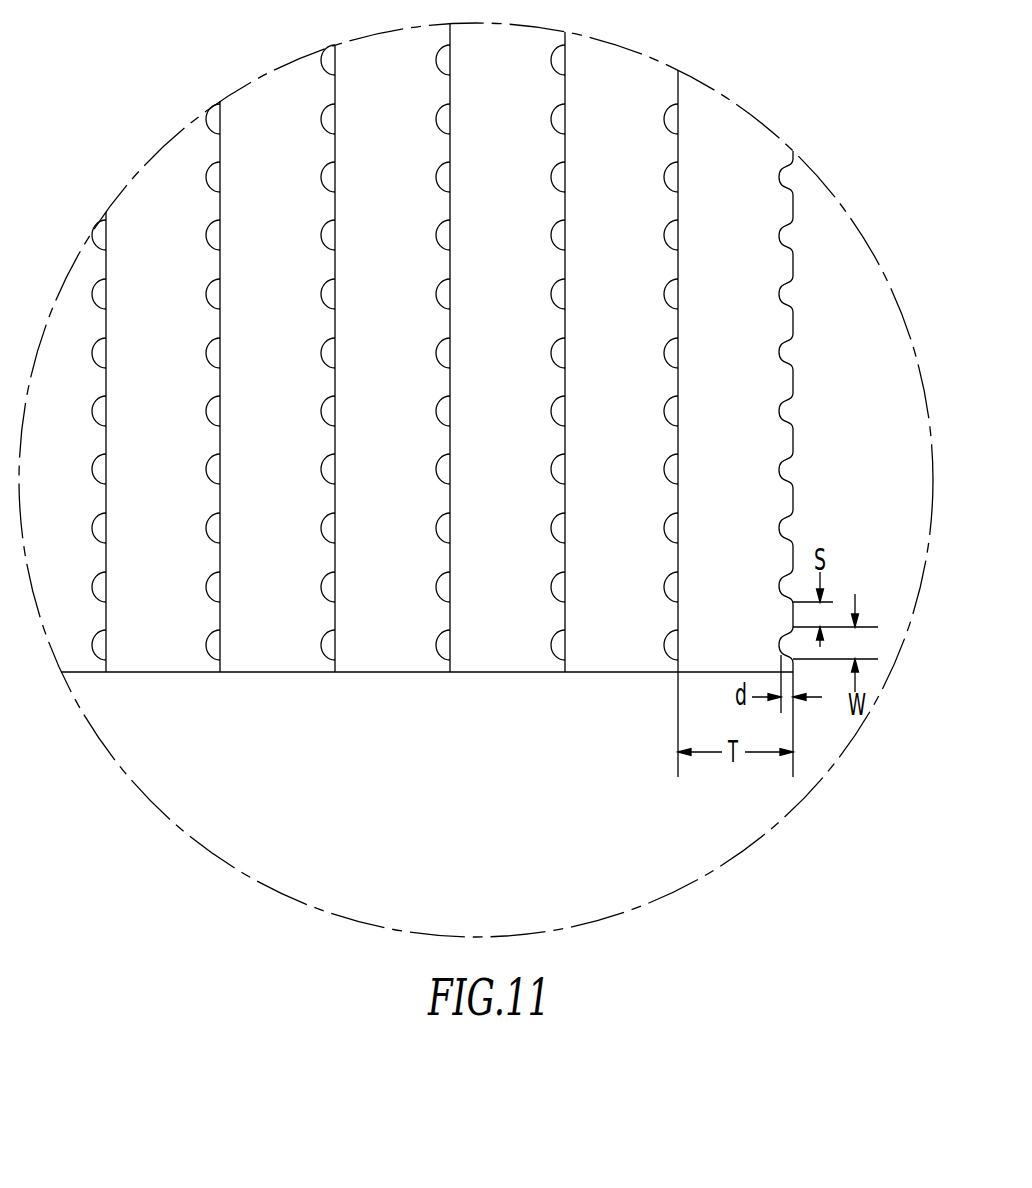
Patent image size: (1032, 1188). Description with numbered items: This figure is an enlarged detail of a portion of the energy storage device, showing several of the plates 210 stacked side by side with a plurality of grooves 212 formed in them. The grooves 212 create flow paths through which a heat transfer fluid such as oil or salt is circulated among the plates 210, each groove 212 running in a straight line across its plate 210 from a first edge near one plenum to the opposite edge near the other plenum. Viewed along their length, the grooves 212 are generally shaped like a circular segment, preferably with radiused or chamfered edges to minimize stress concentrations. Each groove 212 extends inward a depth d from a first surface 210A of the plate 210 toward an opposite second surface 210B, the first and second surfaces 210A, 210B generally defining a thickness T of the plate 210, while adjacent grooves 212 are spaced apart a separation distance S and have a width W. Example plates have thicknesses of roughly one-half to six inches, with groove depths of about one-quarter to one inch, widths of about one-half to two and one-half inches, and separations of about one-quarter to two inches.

The plates 210 is at (726, 137).
The first surface 210A is at (803, 326).
The second surface 210B is at (670, 376).
The grooves 212 is at (672, 466).